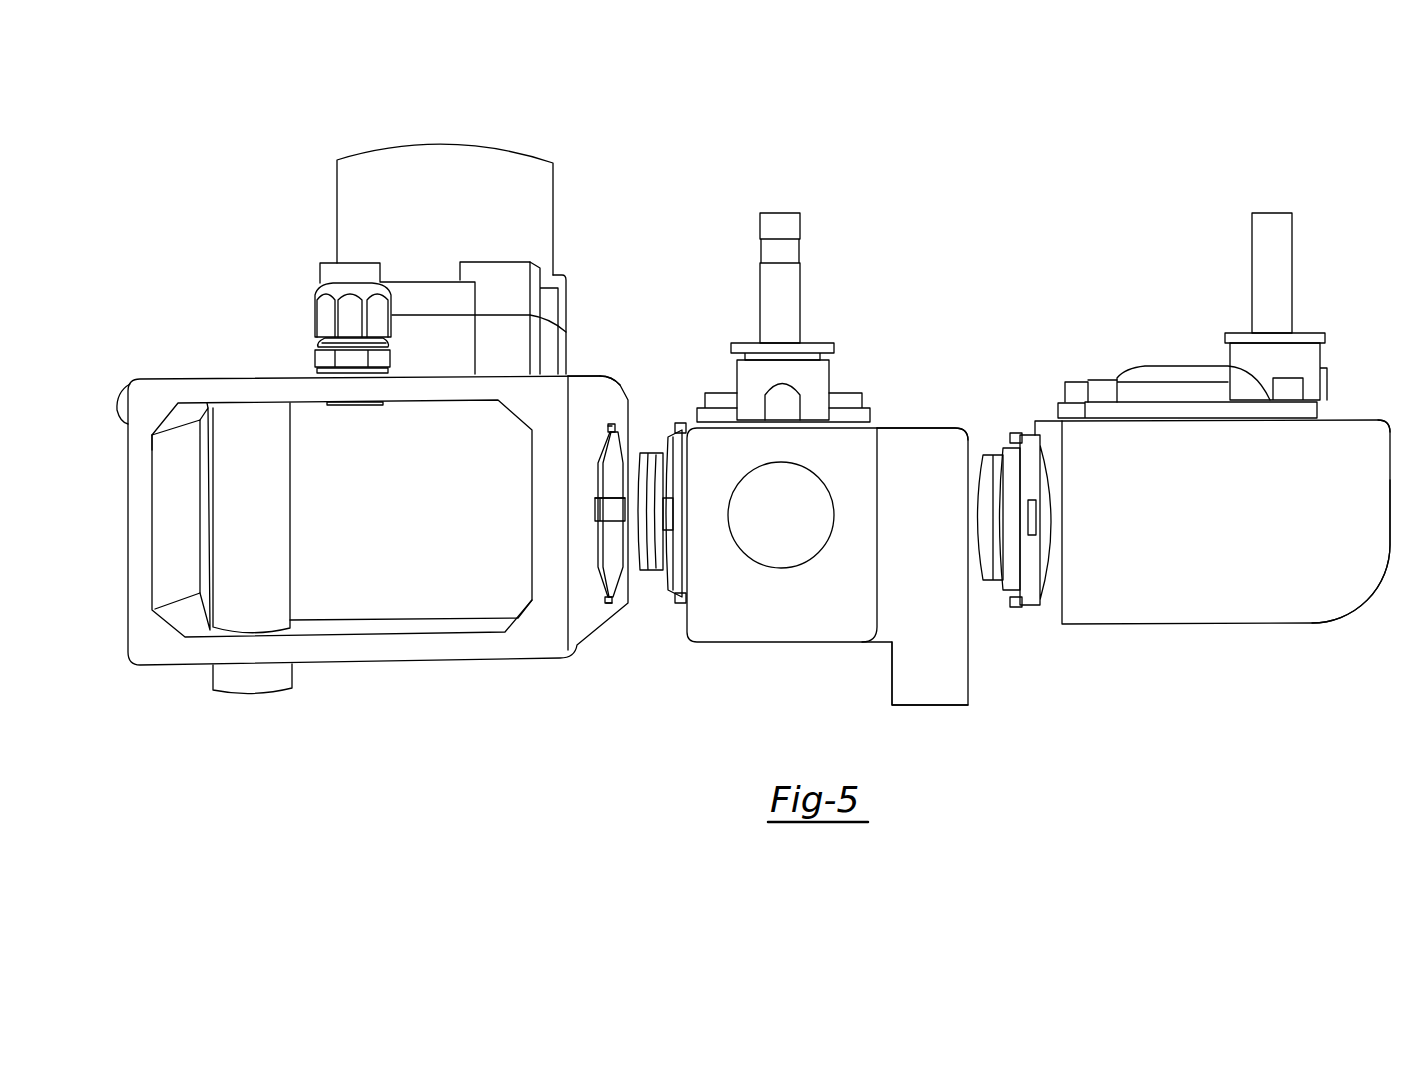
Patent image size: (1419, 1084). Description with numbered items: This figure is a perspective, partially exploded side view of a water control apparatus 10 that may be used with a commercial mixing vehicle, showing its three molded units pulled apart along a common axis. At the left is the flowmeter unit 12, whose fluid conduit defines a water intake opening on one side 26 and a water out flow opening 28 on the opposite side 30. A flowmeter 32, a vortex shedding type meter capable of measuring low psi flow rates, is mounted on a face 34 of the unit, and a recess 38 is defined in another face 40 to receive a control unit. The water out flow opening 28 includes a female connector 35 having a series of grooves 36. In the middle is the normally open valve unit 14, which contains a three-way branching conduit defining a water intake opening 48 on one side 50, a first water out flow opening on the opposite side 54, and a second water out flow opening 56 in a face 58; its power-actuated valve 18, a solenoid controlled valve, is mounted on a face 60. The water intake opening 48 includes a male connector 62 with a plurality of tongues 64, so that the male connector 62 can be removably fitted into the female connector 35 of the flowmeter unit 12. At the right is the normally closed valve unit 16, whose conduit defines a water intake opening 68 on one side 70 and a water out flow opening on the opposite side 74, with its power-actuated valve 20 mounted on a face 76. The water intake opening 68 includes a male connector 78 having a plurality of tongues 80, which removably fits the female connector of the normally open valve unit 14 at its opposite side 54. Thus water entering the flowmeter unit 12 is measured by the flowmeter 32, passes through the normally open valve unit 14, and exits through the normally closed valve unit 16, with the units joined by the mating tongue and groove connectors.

The water control apparatus 10 is at (1036, 218).
The flowmeter unit 12 is at (390, 522).
The normally open valve unit 14 is at (869, 536).
The normally closed valve unit 16 is at (1240, 525).
The power-actuated valve 18 is at (732, 368).
The power-actuated valve 20 is at (1138, 371).
The side of the flowmeter unit 26 is at (123, 390).
The water out flow opening 28 is at (662, 513).
The opposite side of the flowmeter unit 30 is at (582, 397).
The flowmeter 32 is at (548, 170).
The face of the flowmeter unit 34 is at (237, 378).
The female connector 35 is at (610, 578).
The grooves 36 is at (625, 428).
The recess 38 is at (362, 604).
The face of the flowmeter unit 40 is at (548, 402).
The water intake opening 48 is at (656, 455).
The side of the normally open valve unit 50 is at (675, 632).
The opposite side of the normally open valve unit 54 is at (972, 660).
The second water out flow opening 56 is at (790, 524).
The face of the normally open valve unit 58 is at (862, 629).
The face of the normally open valve unit 60 is at (905, 426).
The male connector 62 is at (678, 554).
The tongues 64 is at (683, 423).
The water intake opening 68 is at (986, 520).
The side of the normally closed valve unit 70 is at (1036, 430).
The opposite side of the normally closed valve unit 74 is at (1393, 510).
The face of the valve unit 76 is at (1370, 420).
The male connector 78 is at (1048, 556).
The tongues 80 is at (1022, 440).